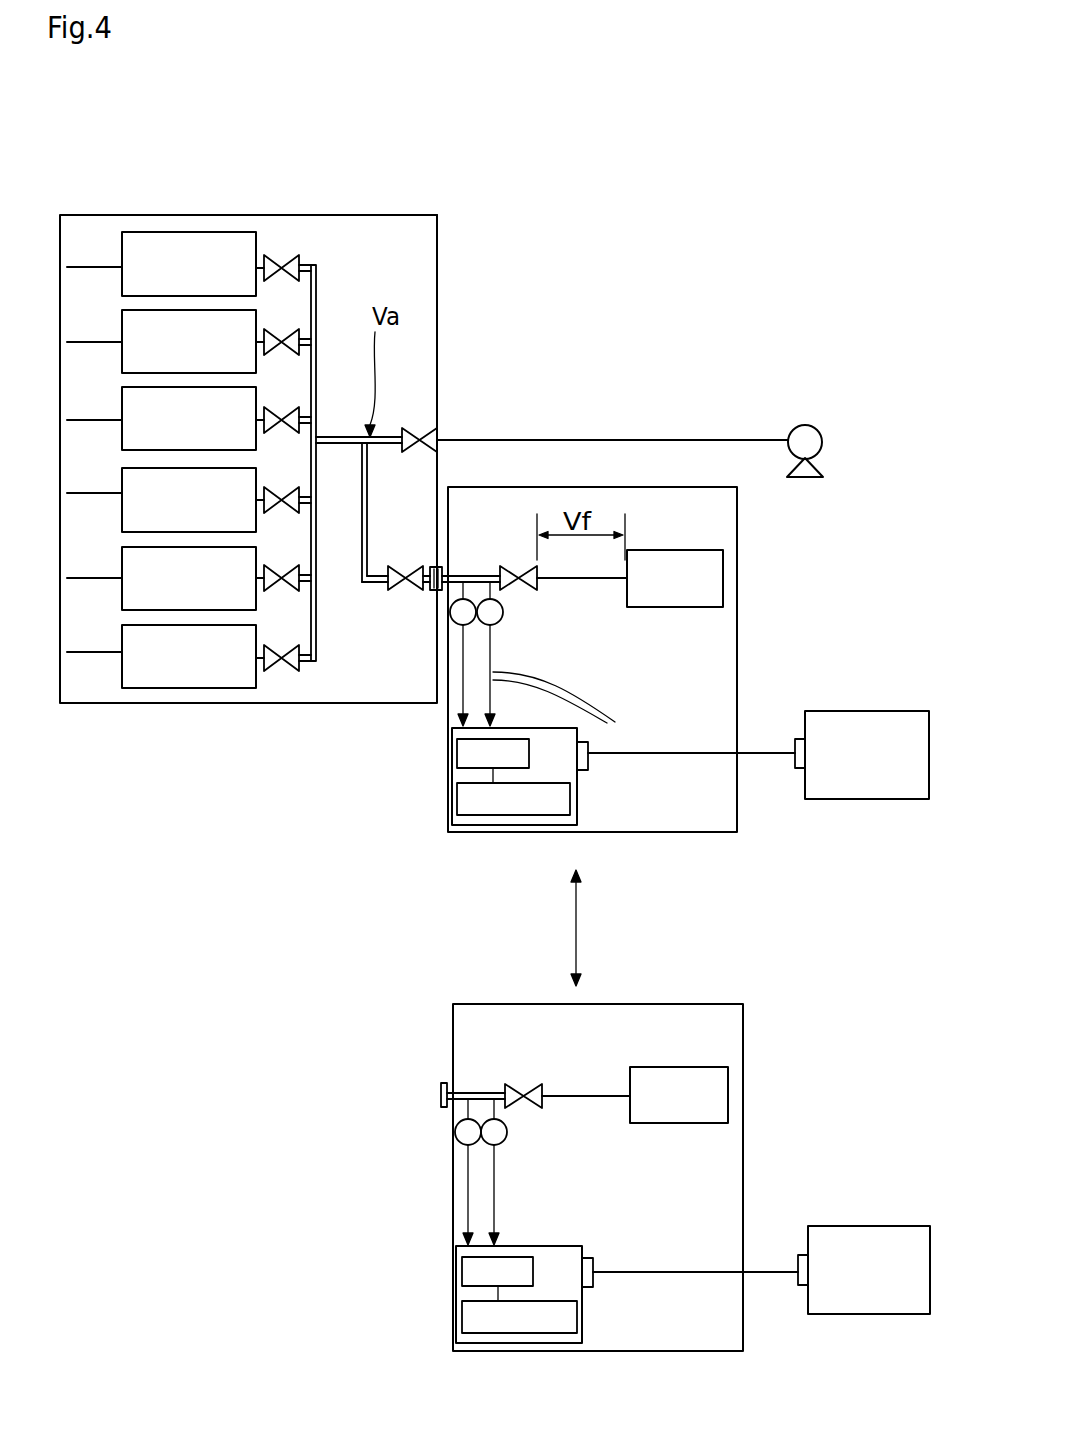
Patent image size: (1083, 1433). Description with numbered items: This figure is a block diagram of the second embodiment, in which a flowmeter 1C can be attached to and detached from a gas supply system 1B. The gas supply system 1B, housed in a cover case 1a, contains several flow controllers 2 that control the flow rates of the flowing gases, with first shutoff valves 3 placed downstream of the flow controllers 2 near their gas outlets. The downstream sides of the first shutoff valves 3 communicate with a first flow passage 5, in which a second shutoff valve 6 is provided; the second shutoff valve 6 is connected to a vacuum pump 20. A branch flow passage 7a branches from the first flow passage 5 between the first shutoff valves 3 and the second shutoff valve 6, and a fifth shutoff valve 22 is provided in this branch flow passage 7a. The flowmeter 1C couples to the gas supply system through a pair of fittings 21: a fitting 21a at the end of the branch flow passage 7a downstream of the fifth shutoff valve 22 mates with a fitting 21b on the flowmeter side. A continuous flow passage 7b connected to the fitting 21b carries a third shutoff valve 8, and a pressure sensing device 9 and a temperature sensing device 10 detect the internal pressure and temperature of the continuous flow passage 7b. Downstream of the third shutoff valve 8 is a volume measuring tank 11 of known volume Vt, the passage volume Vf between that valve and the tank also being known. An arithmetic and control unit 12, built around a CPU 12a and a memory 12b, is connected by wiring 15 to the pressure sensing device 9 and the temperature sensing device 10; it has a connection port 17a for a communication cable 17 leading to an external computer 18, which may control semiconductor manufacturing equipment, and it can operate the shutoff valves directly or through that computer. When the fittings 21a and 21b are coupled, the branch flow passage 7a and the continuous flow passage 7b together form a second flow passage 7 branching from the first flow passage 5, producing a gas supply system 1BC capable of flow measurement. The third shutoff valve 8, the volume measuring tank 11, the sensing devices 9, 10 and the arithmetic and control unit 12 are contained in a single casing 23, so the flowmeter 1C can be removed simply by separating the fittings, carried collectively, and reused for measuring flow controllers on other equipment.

The gas supply system 1B is at (334, 203).
The gas supply system capable of flow measurement 1BC is at (592, 227).
The flowmeter 1C is at (660, 862).
The cover case 1a is at (372, 215).
The flow controllers 2 is at (165, 231).
The first shutoff valves 3 is at (277, 254).
The first flow passage 5 is at (388, 437).
The second shutoff valve 6 is at (410, 427).
The second flow passage 7 is at (458, 463).
The branch flow passage 7a is at (366, 490).
The continuous flow passage 7b is at (475, 576).
The third shutoff valve 8 is at (520, 566).
The pressure sensing device 9 is at (503, 613).
The temperature sensing device 10 is at (468, 622).
The volume measuring tank 11 is at (672, 608).
The arithmetic and control unit 12 is at (490, 833).
The CPU 12a is at (458, 758).
The memory 12b is at (555, 813).
The wiring 15 is at (571, 706).
The communication cable 17 is at (682, 758).
The connection port 17a is at (590, 765).
The external computer 18 is at (848, 800).
The vacuum pump 20 is at (806, 423).
The fittings 21 is at (367, 684).
The fitting 21a is at (433, 590).
The fitting 21b is at (440, 590).
The fifth shutoff valve 22 is at (405, 566).
The casing 23 is at (738, 627).